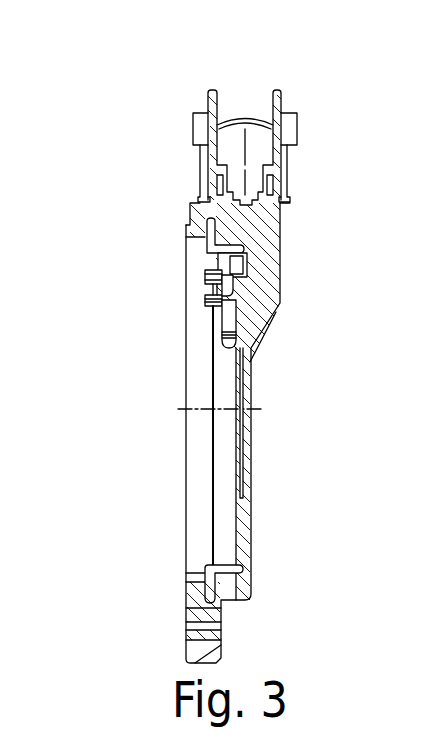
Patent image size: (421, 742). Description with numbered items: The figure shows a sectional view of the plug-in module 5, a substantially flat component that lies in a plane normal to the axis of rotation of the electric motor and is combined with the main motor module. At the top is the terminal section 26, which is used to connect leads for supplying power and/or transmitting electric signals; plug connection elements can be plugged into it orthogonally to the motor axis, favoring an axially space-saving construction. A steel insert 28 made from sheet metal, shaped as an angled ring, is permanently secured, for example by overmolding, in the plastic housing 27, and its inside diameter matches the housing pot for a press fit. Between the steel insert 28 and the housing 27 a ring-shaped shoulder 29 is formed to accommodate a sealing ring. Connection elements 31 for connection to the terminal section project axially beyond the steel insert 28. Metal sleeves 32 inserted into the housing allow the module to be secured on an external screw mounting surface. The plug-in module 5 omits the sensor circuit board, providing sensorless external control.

The plug-in module 5 is at (119, 86).
The terminal section 26 is at (213, 157).
The housing 27 is at (253, 533).
The steel insert 28 is at (198, 576).
The shoulder 29 is at (204, 238).
The connection elements 31 is at (203, 282).
The metal sleeves 32 is at (222, 637).